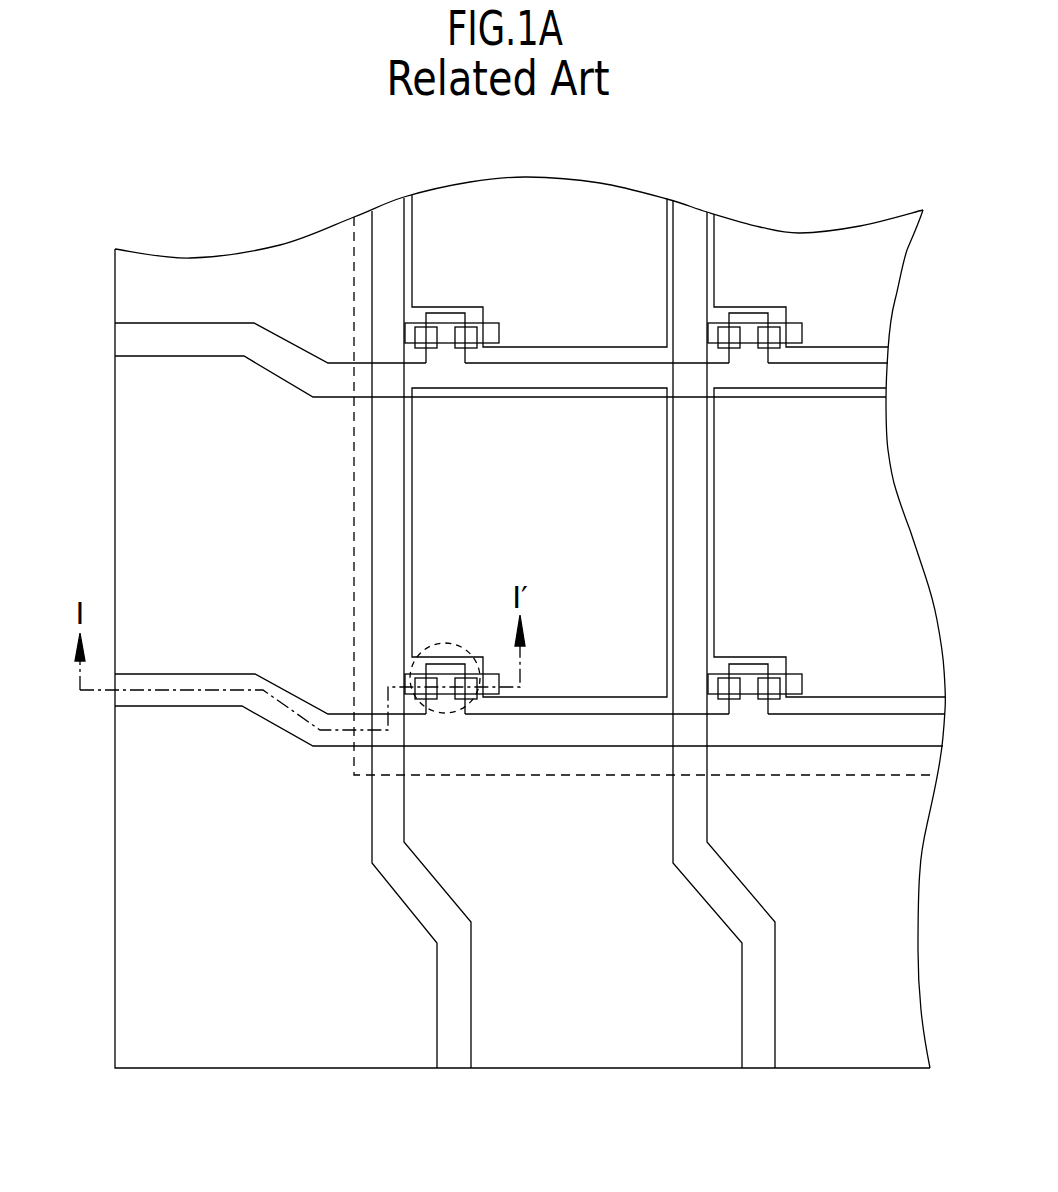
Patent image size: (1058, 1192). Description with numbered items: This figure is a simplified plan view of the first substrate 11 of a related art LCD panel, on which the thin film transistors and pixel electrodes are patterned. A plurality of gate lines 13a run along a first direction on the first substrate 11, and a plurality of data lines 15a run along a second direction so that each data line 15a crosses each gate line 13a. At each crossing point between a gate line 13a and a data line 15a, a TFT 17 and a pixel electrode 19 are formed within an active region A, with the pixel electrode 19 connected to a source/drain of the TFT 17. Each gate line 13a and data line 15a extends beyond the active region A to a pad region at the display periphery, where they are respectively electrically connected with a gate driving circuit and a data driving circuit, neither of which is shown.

The first substrate 11 is at (115, 473).
The gate line 13a is at (190, 698).
The data line 15a is at (453, 1053).
The thin film transistor 17 is at (445, 713).
The pixel electrode 19 is at (437, 533).
The active region A is at (823, 776).